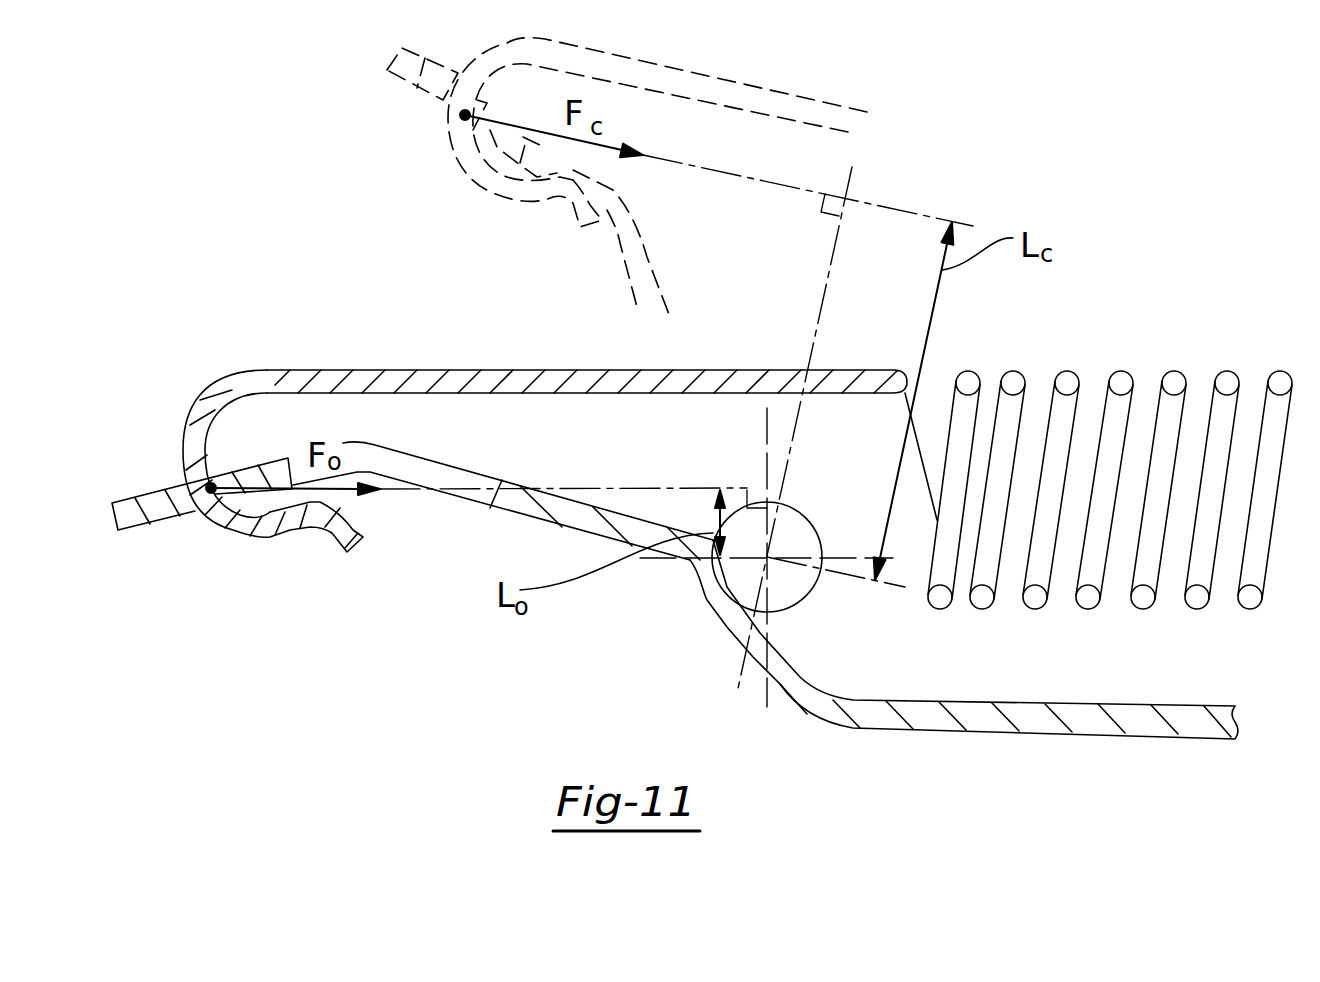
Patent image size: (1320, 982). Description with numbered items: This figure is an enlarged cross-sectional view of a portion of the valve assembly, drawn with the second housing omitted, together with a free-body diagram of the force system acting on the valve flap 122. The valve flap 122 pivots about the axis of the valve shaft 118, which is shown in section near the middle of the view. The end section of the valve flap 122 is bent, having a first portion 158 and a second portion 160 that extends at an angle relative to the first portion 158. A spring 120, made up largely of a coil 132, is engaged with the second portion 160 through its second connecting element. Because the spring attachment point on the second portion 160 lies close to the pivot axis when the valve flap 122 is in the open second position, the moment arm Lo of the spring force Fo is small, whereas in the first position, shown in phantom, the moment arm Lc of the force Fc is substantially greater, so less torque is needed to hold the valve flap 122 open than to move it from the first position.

The valve shaft 118 is at (747, 587).
The spring 120 is at (1098, 431).
The monolithic valve flap 122 is at (983, 750).
The coil 132 is at (1226, 372).
The first portion 158 is at (465, 478).
The second portion 160 is at (135, 517).